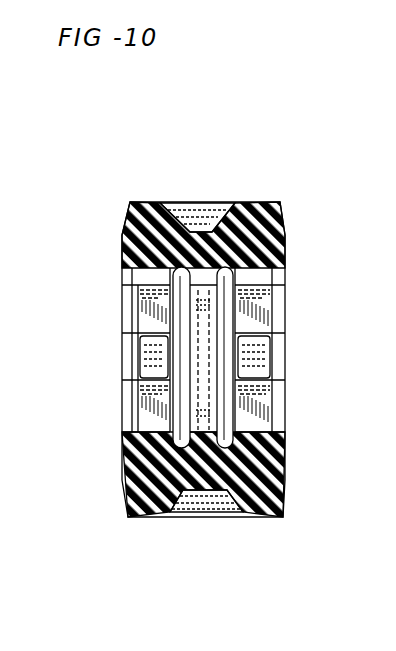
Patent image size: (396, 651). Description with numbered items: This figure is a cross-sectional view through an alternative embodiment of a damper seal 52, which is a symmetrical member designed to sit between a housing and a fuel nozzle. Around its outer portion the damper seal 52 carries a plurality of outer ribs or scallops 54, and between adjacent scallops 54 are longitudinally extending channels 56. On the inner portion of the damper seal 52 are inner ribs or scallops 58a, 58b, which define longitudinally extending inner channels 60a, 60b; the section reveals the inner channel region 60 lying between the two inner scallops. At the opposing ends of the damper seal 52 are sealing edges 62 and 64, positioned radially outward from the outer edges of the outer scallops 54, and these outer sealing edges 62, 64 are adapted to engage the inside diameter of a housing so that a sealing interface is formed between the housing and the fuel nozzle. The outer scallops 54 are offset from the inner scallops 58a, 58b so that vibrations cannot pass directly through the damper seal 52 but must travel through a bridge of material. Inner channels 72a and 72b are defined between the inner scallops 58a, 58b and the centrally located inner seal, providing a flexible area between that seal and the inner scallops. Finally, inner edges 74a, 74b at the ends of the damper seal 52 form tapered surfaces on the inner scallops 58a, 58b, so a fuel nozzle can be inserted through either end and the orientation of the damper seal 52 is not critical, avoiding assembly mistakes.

The damper seal 52 is at (300, 526).
The outer ribs or scallops 54 is at (210, 202).
The longitudinally extending channels 56 is at (120, 430).
The inner rib or scallop 58a is at (126, 308).
The inner rib or scallop 58b is at (286, 289).
The central web 60 is at (284, 372).
The longitudinally extending inner channel 60a is at (176, 203).
The longitudinally extending inner channel 60b is at (250, 201).
The sealing edge 62 is at (126, 201).
The sealing edge 64 is at (265, 201).
The inner channel 72a is at (128, 338).
The inner channel 72b is at (282, 337).
The inner edge 74a is at (124, 437).
The inner edge 74b is at (286, 460).